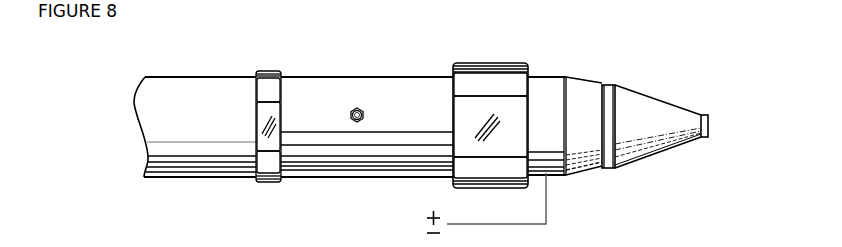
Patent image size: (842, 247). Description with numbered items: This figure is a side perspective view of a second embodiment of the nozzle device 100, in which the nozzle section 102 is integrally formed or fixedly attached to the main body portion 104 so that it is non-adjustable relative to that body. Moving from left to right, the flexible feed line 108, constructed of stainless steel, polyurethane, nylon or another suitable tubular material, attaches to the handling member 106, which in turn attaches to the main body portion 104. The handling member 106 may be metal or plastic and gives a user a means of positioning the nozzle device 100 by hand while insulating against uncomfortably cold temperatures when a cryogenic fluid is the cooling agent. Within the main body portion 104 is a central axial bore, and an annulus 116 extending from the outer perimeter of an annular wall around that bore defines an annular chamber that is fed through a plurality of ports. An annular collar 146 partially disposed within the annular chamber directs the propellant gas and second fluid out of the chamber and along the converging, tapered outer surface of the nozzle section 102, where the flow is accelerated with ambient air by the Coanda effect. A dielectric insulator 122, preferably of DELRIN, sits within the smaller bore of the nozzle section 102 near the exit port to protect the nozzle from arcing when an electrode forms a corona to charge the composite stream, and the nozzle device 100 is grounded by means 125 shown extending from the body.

The nozzle device 100 is at (689, 203).
The nozzle section 102 is at (688, 106).
The main body portion 104 is at (555, 74).
The handling member 106 is at (351, 74).
The feed line 108 is at (168, 74).
The annulus 116 is at (600, 170).
The dielectric insulator 122 is at (705, 138).
The grounding means 125 is at (503, 224).
The annular collar 146 is at (603, 85).